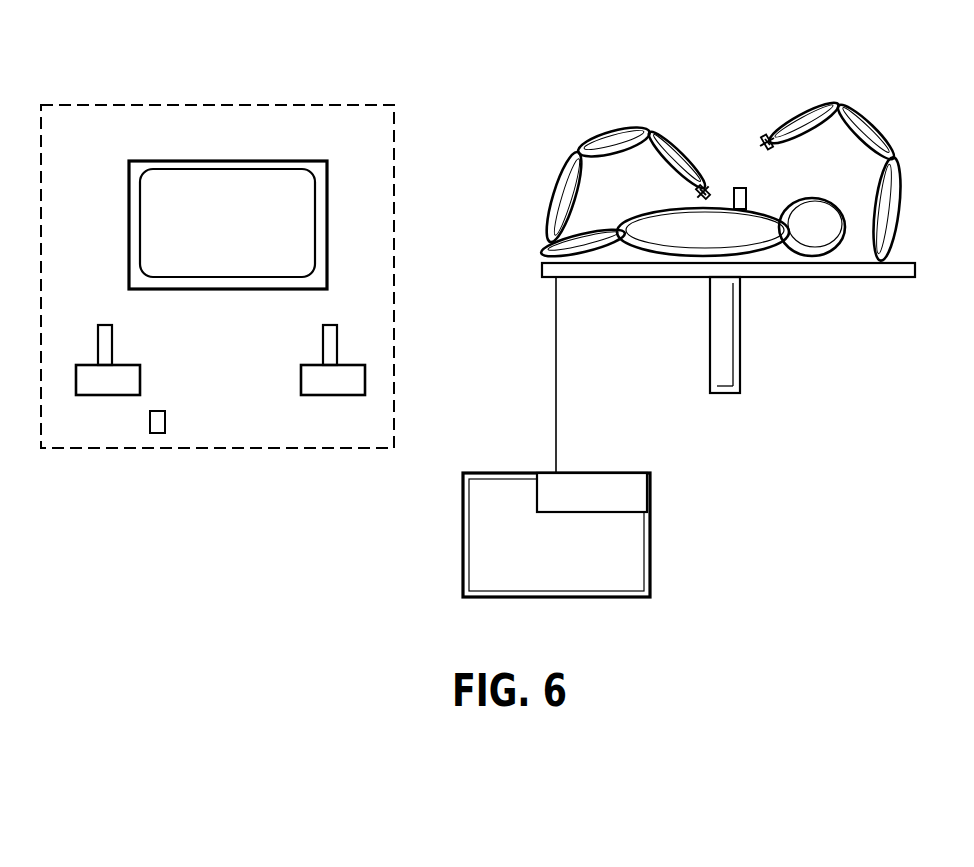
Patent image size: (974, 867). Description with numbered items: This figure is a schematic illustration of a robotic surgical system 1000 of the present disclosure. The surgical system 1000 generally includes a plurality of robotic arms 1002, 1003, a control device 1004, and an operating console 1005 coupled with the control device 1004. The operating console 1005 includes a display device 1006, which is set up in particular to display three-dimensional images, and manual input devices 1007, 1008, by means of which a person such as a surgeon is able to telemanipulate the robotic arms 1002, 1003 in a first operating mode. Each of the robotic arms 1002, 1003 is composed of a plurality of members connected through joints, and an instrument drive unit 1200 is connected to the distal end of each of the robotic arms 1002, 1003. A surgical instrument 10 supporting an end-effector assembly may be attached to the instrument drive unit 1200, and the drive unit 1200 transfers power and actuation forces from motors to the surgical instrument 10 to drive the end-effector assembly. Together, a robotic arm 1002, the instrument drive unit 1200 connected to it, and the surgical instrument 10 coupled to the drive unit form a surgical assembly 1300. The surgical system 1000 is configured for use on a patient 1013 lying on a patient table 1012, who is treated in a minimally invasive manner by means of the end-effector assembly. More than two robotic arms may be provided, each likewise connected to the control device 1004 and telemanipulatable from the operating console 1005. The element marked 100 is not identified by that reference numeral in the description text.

The operating console 1005 is at (217, 260).
The display device 1006 is at (250, 232).
The manual input device 1007 is at (89, 383).
The manual input device 1008 is at (332, 383).
The surgical system 1000 is at (807, 508).
The robotic arm 1002 is at (573, 148).
The robotic arm 1003 is at (880, 133).
The instrument drive unit 1200 is at (708, 187).
The surgical instrument 10 is at (717, 180).
The surgical assembly 1300 is at (686, 194).
The sensor / body attachment 100 is at (742, 188).
The patient table 1012 is at (648, 267).
The patient 1013 is at (743, 235).
The control device 1004 is at (567, 553).